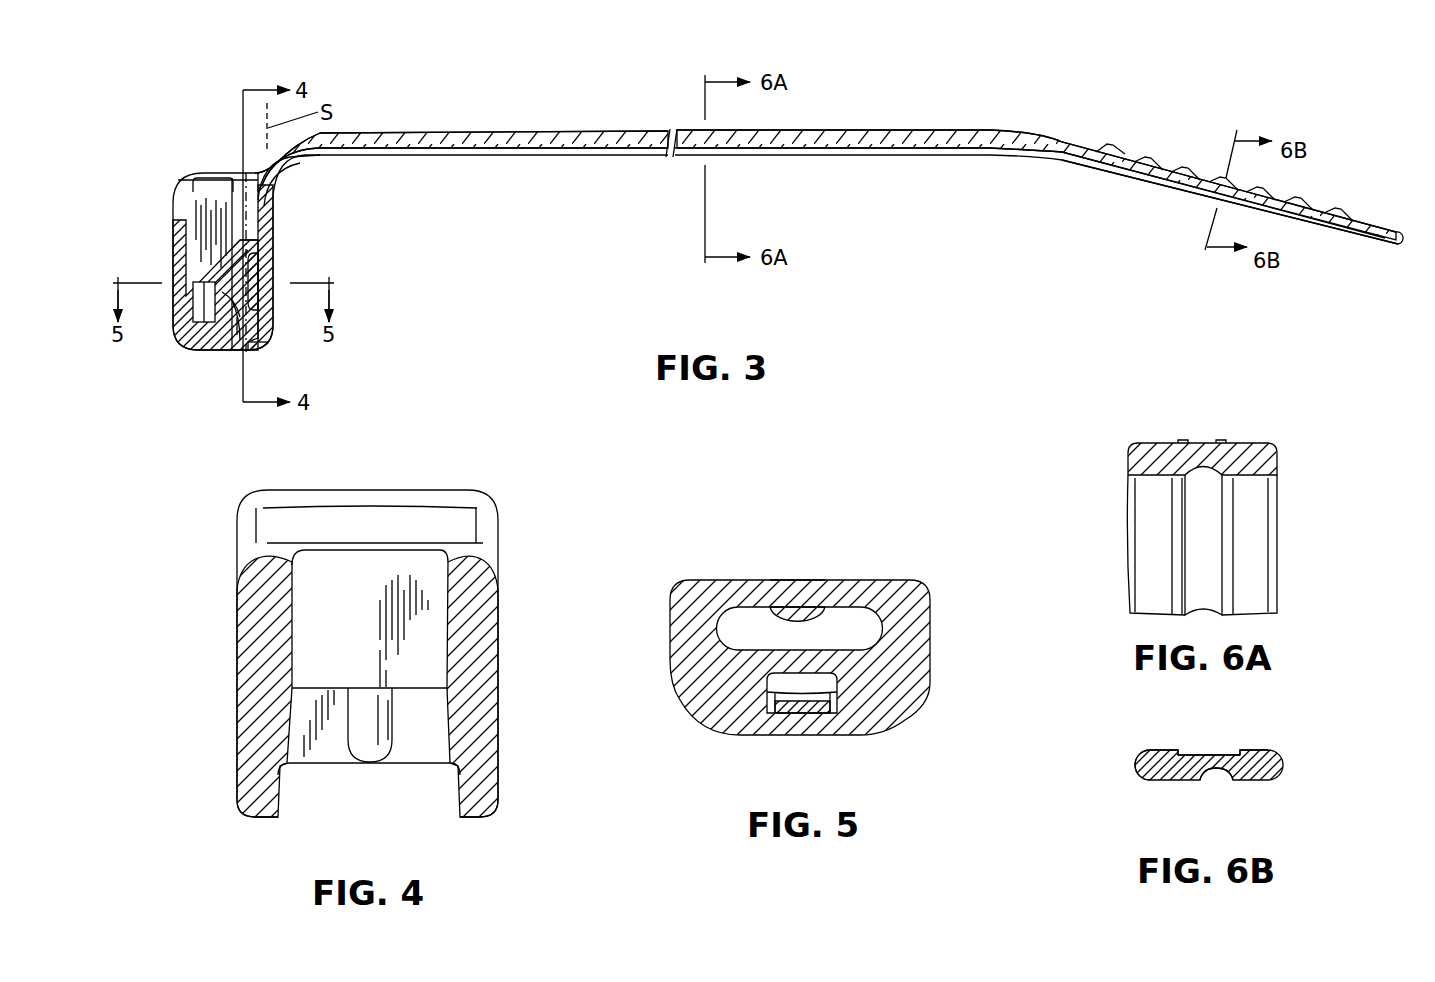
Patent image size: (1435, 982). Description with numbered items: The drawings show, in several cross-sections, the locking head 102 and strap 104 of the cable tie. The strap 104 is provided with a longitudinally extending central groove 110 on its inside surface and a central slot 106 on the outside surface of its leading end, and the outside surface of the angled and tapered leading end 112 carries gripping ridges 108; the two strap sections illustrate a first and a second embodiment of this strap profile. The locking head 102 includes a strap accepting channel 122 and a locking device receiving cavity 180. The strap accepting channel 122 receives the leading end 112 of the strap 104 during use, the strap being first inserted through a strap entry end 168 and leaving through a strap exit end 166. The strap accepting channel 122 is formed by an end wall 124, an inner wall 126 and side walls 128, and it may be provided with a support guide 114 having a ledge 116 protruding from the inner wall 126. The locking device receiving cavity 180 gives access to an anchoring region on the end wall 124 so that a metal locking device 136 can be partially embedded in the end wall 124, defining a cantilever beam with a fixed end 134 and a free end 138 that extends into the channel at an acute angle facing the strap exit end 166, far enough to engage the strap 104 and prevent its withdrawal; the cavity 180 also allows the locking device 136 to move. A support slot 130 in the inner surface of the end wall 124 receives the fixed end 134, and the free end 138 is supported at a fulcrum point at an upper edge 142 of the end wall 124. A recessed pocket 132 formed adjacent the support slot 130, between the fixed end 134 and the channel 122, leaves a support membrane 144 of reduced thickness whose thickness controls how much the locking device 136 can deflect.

In FIG. 4, the locking head 102 is at (503, 714).
In FIG. 3, the strap 104 is at (530, 130).
In FIG. 4, the strap 104 is at (402, 491).
In FIG. 6A, the strap 104 is at (1250, 450).
In FIG. 6B, the strap 104 is at (1275, 762).
In FIG. 6B, the central slot 106 is at (1215, 755).
In FIG. 3, the gripping ridges 108 is at (1298, 202).
In FIG. 6B, the gripping ridges 108 is at (1160, 750).
In FIG. 3, the central groove 110 is at (572, 155).
In FIG. 6A, the central groove 110 is at (1190, 470).
In FIG. 6B, the central groove 110 is at (1212, 772).
In FIG. 3, the leading end 112 is at (1372, 228).
In FIG. 6A, the leading end 112 is at (1260, 558).
In FIG. 6B, the leading end 112 is at (1150, 757).
In FIG. 3, the support guide 114 is at (227, 290).
In FIG. 4, the support guide 114 is at (372, 757).
In FIG. 5, the support guide 114 is at (747, 623).
In FIG. 3, the ledge 116 is at (257, 263).
In FIG. 4, the ledge 116 is at (362, 687).
In FIG. 3, the strap accepting channel 122 is at (253, 195).
In FIG. 4, the strap accepting channel 122 is at (337, 572).
In FIG. 5, the strap accepting channel 122 is at (860, 615).
In FIG. 3, the end wall 124 is at (180, 250).
In FIG. 5, the end wall 124 is at (850, 717).
In FIG. 3, the inner wall 126 is at (270, 203).
In FIG. 4, the inner wall 126 is at (322, 750).
In FIG. 5, the inner wall 126 is at (806, 587).
In FIG. 4, the side walls 128 is at (245, 667).
In FIG. 5, the side walls 128 is at (678, 625).
In FIG. 3, the support slot 130 is at (212, 318).
In FIG. 3, the recessed pocket 132 is at (222, 318).
In FIG. 3, the fixed end 134 is at (200, 283).
In FIG. 3, the metal locking device 136 is at (237, 237).
In FIG. 3, the free end 138 is at (237, 235).
In FIG. 3, the upper edge 142 is at (233, 317).
In FIG. 3, the support membrane 144 is at (237, 318).
In FIG. 3, the strap exit end 166 is at (235, 163).
In FIG. 4, the strap exit end 166 is at (427, 541).
In FIG. 3, the strap entry end 168 is at (267, 343).
In FIG. 4, the strap entry end 168 is at (417, 792).
In FIG. 3, the locking device receiving cavity 180 is at (215, 207).